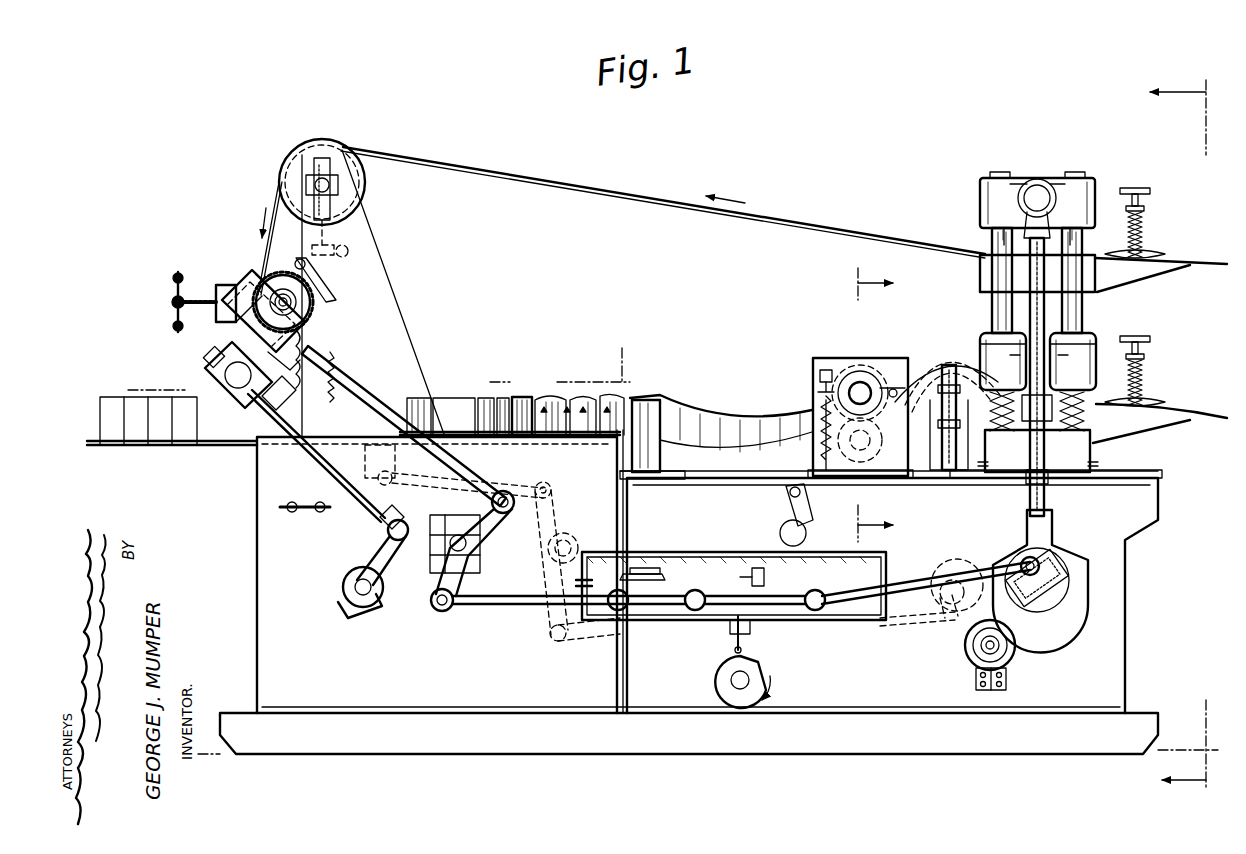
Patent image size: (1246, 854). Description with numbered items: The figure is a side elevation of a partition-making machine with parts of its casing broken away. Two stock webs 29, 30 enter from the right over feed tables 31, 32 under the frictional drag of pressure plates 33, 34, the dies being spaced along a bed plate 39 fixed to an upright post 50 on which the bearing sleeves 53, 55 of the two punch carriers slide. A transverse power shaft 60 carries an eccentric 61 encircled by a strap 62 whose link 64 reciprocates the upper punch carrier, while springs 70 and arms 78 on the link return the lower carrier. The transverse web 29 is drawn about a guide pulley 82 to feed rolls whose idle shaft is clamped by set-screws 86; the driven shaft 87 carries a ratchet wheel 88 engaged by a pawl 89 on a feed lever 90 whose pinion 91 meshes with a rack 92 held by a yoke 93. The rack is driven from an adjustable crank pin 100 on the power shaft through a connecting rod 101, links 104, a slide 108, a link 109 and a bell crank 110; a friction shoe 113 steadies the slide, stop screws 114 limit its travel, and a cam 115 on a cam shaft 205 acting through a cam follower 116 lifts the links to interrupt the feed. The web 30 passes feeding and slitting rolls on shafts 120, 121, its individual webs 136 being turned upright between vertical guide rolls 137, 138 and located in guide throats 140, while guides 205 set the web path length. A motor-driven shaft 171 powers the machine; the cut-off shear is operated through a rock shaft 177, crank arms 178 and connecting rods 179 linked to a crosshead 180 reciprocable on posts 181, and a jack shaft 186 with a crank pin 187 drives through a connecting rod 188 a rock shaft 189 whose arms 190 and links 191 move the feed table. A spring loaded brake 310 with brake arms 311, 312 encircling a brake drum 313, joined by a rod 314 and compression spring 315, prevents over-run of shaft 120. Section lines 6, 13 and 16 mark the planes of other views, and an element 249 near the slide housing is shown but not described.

The section line 6- 6 is at (1167, 431).
The cards / section line 13- 13 is at (138, 390).
The section line 16- 16 is at (890, 404).
The stock web 29 is at (268, 242).
The stock web 30 is at (1218, 410).
The feed table 31 is at (1148, 276).
The feed table 32 is at (1160, 426).
The pressure plate 33 is at (1150, 250).
The pressure plate 34 is at (1150, 400).
The bed plate 39 is at (1037, 280).
The upright post 50 is at (1004, 162).
The bearing sleeve 53 is at (980, 196).
The bearing sleeve 55 is at (1094, 342).
The power shaft 60 is at (1046, 596).
The eccentric 61 is at (1066, 584).
The strap 62 is at (1084, 562).
The link 64 is at (1044, 486).
The spring 70 is at (1086, 398).
The arm 78 is at (1042, 420).
The guide pulley 82 is at (364, 192).
The set-screw 86 is at (176, 290).
The shaft 87 is at (291, 310).
The ratchet wheel 88 is at (262, 282).
The pawl 89 is at (297, 262).
The feed lever 90 is at (312, 288).
The pinion 91 is at (262, 350).
The rack 92 is at (342, 372).
The yoke 93 is at (280, 352).
The crank pin 100 is at (1022, 556).
The connecting rod 101 is at (920, 590).
The link 104 is at (806, 598).
The slide 108 is at (680, 612).
The link 109 is at (504, 606).
The bell crank 110 is at (460, 572).
The friction shoe 113 is at (684, 568).
The stop screw 114 is at (590, 594).
The cam 115 is at (760, 670).
The cam follower 116 is at (734, 650).
The shaft 120 is at (864, 386).
The shaft 121 is at (872, 452).
The individual web 136 is at (576, 396).
The vertical guide roll 137 is at (654, 414).
The vertical guide roll 138 is at (524, 394).
The guide throat 140 is at (468, 396).
The drive shaft 171 is at (972, 652).
The rock shaft 177 is at (356, 586).
The crank arm 178 is at (380, 546).
The connecting rod 179 is at (322, 468).
The crosshead 180 is at (240, 396).
The post 181 is at (208, 354).
The jack shaft 186 is at (950, 578).
The crank pin 187 is at (942, 612).
The connecting rod 188 is at (890, 622).
The rock shaft 189 is at (572, 546).
The arm 190 is at (556, 520).
The link 191 is at (533, 486).
The cam shaft 205 is at (732, 682).
The lever 249 is at (804, 496).
The spring loaded brake 310 is at (846, 378).
The brake arm 311 is at (860, 372).
The brake arm 312 is at (870, 412).
The brake drum 313 is at (872, 386).
The rod 314 is at (818, 390).
The compression spring 315 is at (818, 446).